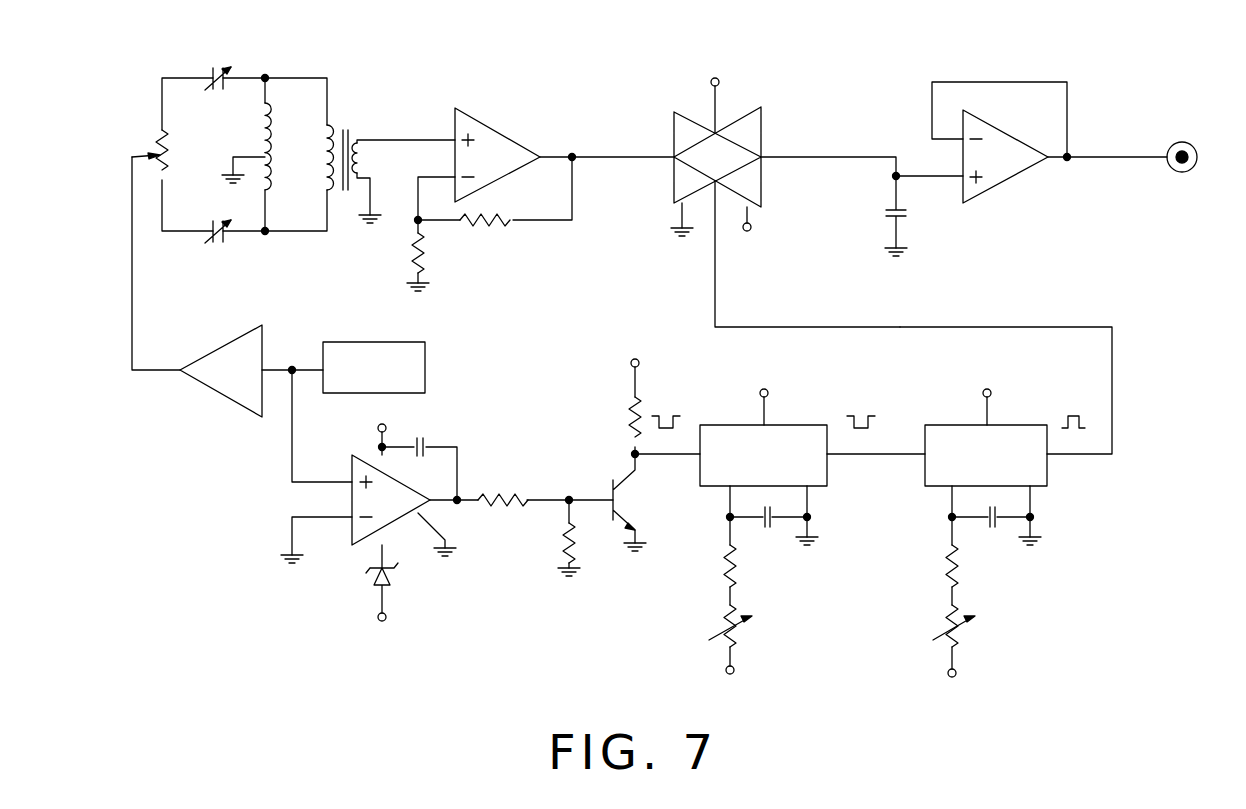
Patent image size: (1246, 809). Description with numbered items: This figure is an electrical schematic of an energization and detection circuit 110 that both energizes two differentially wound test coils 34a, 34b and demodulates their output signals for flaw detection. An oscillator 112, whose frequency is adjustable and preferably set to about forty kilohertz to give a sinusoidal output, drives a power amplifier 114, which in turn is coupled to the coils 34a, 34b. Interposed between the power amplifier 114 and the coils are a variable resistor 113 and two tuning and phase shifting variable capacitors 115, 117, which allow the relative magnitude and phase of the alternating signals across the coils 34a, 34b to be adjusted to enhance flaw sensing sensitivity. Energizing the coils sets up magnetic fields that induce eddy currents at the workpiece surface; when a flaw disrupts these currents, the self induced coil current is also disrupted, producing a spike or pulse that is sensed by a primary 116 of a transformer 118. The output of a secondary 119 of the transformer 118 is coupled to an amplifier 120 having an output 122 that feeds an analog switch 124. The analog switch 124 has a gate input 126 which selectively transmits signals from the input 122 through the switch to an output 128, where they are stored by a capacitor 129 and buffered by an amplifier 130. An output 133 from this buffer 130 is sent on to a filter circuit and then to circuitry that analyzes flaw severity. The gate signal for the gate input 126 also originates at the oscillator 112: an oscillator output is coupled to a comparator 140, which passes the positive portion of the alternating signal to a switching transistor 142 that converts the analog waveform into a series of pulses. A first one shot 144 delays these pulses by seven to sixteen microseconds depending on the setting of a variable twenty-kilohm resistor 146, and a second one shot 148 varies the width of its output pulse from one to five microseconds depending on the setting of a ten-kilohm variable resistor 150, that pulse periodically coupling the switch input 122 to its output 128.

The energization and detection circuit 110 is at (985, 315).
The oscillator 112 is at (411, 373).
The variable resistor 113 is at (156, 138).
The power amplifier 114 is at (235, 385).
The tuning and phase shifting variable capacitor 115 is at (214, 72).
The primary 116 is at (339, 131).
The tuning and phase shifting variable capacitor 117 is at (216, 249).
The transformer 118 is at (347, 207).
The secondary 119 is at (364, 163).
The amplifier 120 is at (497, 147).
The output 122 is at (592, 152).
The analog switch 124 is at (748, 122).
The gate input 126 is at (717, 297).
The output 128 is at (838, 150).
The capacitor 129 is at (890, 208).
The amplifier 130 is at (1008, 165).
The output 133 is at (1090, 158).
The test coil 34a is at (259, 136).
The test coil 34b is at (268, 191).
The comparator 140 is at (376, 470).
The switching transistor 142 is at (641, 498).
The first one shot 144 is at (805, 467).
The variable 20k resistor 146 is at (722, 621).
The second one shot 148 is at (1030, 467).
The 10k variable resistor 150 is at (948, 620).